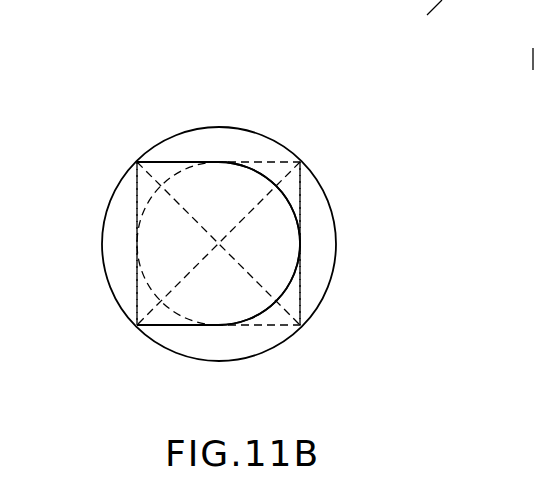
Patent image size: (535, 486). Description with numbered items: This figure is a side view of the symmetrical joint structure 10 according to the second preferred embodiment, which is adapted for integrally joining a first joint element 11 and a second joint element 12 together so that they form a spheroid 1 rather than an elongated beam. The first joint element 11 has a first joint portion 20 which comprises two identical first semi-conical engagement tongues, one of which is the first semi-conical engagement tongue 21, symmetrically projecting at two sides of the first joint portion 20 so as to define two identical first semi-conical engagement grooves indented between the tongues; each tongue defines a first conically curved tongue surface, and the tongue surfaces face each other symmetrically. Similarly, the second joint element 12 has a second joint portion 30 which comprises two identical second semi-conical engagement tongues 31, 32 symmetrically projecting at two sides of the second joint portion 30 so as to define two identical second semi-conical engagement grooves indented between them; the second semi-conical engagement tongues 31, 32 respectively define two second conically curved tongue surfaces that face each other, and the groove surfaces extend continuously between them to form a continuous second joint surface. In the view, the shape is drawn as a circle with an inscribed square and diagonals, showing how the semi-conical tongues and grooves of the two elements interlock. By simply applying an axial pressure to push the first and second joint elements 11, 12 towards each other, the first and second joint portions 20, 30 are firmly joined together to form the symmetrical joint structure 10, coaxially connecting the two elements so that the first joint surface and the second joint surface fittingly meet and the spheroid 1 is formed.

The spheroid 1 is at (122, 332).
The symmetrical joint structure 10 is at (224, 156).
The first joint element 11 is at (117, 243).
The second joint element 12 is at (315, 270).
The first joint portion 20 is at (275, 170).
The first semi-conical engagement tongue 21 is at (277, 231).
The second joint portion 30 is at (143, 135).
The second semi-conical engagement tongue 31 is at (230, 347).
The second semi-conical engagement tongue 32 is at (183, 140).